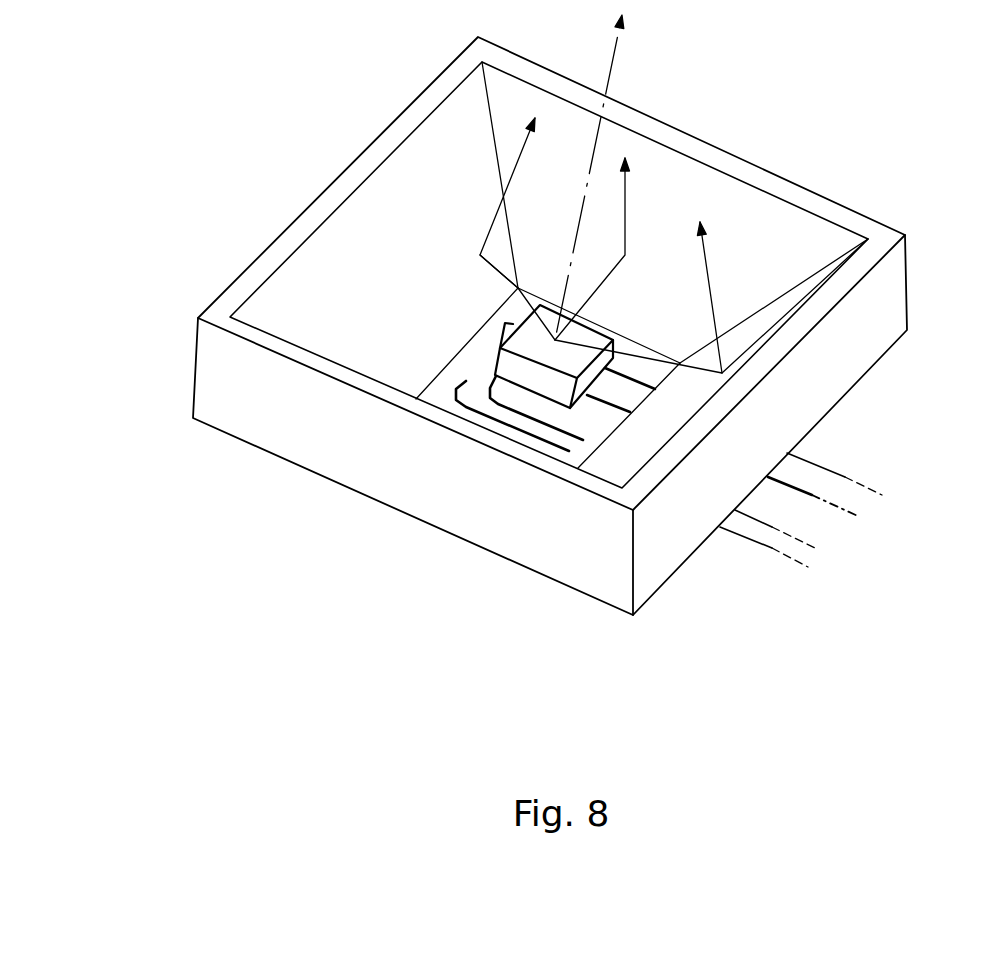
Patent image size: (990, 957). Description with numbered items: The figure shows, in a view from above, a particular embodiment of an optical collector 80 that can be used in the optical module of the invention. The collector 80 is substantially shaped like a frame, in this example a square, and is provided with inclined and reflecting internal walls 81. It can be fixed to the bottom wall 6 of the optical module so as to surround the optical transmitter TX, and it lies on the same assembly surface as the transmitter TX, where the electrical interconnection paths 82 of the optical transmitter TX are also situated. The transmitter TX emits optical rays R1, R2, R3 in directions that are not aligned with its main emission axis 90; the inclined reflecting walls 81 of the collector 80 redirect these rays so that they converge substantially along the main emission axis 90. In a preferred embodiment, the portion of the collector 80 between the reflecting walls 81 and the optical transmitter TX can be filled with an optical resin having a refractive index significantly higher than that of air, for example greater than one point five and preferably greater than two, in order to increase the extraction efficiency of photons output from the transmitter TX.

The optical collector 80 is at (268, 115).
The inclined and reflecting internal walls 81 is at (383, 238).
The electrical interconnection paths 82 is at (466, 384).
The bottom wall 6 is at (440, 390).
The main emission axis 90 is at (607, 90).
The optical transmitter TX is at (580, 333).
The optical ray R1 is at (492, 220).
The optical ray R2 is at (630, 190).
The optical ray R3 is at (712, 296).